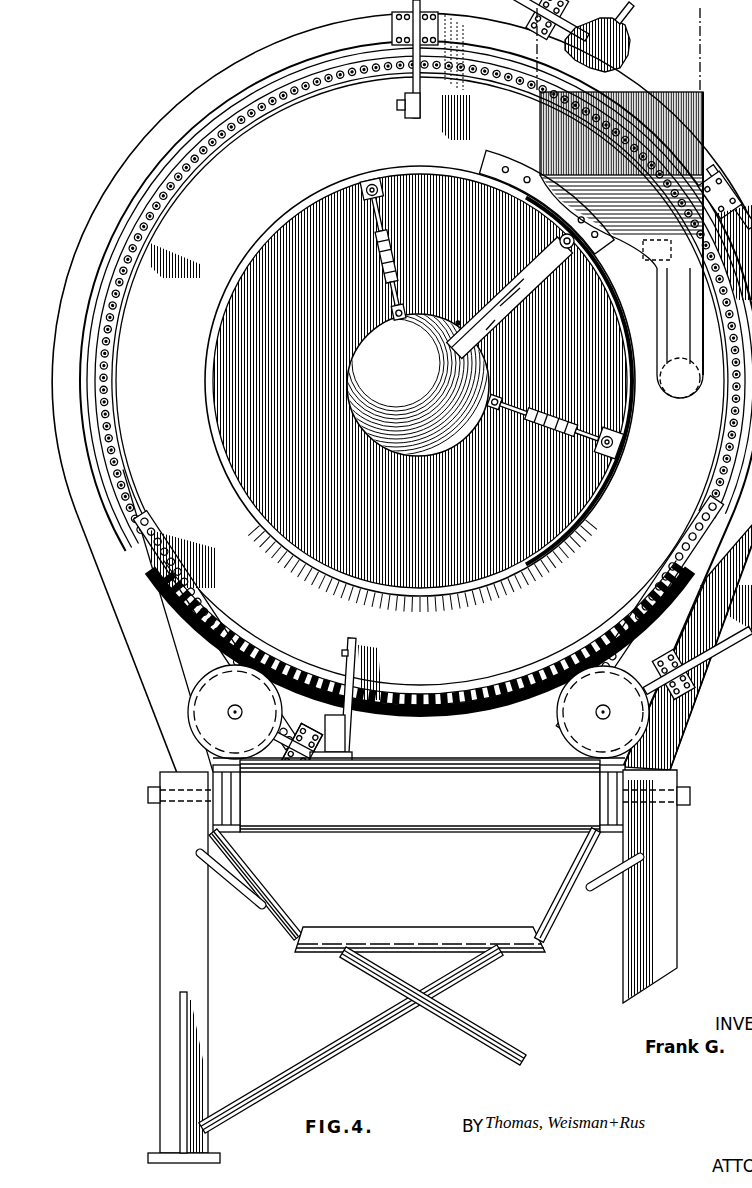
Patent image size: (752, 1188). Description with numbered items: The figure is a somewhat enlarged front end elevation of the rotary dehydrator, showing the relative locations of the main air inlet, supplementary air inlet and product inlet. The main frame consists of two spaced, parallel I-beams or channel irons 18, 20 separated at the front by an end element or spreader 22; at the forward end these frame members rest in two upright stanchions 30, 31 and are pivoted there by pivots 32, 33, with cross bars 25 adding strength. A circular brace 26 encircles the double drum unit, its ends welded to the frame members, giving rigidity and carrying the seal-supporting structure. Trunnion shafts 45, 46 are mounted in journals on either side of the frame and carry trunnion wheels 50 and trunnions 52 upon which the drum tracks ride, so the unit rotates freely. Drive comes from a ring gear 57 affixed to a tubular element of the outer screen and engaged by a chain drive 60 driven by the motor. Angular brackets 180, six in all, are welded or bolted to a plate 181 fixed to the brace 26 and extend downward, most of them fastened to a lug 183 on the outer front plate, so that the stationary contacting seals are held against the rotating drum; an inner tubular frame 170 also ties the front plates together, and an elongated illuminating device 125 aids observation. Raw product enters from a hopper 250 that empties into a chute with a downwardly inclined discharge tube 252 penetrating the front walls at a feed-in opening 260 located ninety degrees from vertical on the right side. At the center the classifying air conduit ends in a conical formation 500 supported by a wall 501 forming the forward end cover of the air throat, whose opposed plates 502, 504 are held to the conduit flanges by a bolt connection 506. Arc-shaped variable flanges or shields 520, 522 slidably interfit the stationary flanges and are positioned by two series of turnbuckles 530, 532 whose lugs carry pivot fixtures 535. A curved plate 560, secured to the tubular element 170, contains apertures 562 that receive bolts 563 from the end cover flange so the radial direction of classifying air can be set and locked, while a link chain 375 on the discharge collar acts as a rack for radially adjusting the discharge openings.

The I-beam 18 is at (604, 793).
The I-beam 20 is at (236, 781).
The end element or spreader 22 is at (366, 808).
The cross bar 25 is at (290, 940).
The circular brace 26 is at (152, 136).
The upright stanchion 30 is at (160, 946).
The upright stanchion 31 is at (665, 927).
The pivot 32 is at (150, 800).
The pivot 33 is at (690, 798).
The trunnion shaft 45 is at (603, 719).
The trunnion shaft 46 is at (233, 719).
The trunnion wheel 50 is at (622, 676).
The trunnion 52 is at (201, 674).
The ring gear 57 is at (470, 690).
The chain drive 60 is at (113, 297).
The illuminating device 125 is at (630, 40).
The inner tubular frame 170 is at (233, 494).
The bracket 180 is at (150, 228).
The plate 181 is at (98, 220).
The lug 183 is at (192, 258).
The hopper 250 is at (703, 120).
The discharge tube 252 is at (660, 283).
The feed-in opening 260 is at (679, 400).
The link chain drive 375 is at (108, 384).
The conical formation 500 is at (360, 392).
The wall 501 is at (515, 292).
The rear wall 502 is at (505, 316).
The plate 504 is at (452, 318).
The bolt connection 506 is at (489, 334).
The variable flange or shield 520 is at (622, 374).
The variable flange or shield 522 is at (382, 206).
The turnbuckle 530 is at (372, 247).
The turnbuckle 532 is at (545, 428).
The pivot fixture 535 is at (604, 449).
The curved plate 560 is at (500, 204).
The aperture 562 is at (525, 197).
The bolt 563 is at (558, 242).